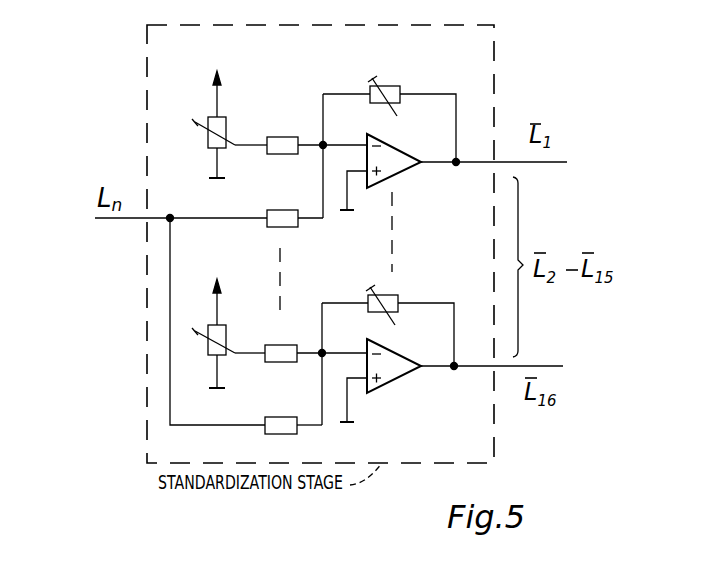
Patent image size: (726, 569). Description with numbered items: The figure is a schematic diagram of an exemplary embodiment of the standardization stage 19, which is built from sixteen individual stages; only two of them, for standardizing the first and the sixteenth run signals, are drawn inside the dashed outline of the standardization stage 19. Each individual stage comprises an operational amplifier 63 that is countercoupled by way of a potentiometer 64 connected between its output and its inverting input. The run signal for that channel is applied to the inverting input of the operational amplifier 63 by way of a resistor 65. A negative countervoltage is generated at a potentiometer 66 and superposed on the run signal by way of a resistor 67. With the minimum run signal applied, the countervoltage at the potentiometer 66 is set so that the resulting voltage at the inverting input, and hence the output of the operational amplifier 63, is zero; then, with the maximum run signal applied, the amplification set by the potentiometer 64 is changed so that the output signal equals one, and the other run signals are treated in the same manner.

The standardization stage 19 is at (168, 444).
The operational amplifier 63 is at (394, 151).
The potentiometer 64 is at (393, 92).
The resistor 65 is at (283, 212).
The potentiometer 66 is at (207, 145).
The resistor 67 is at (287, 137).